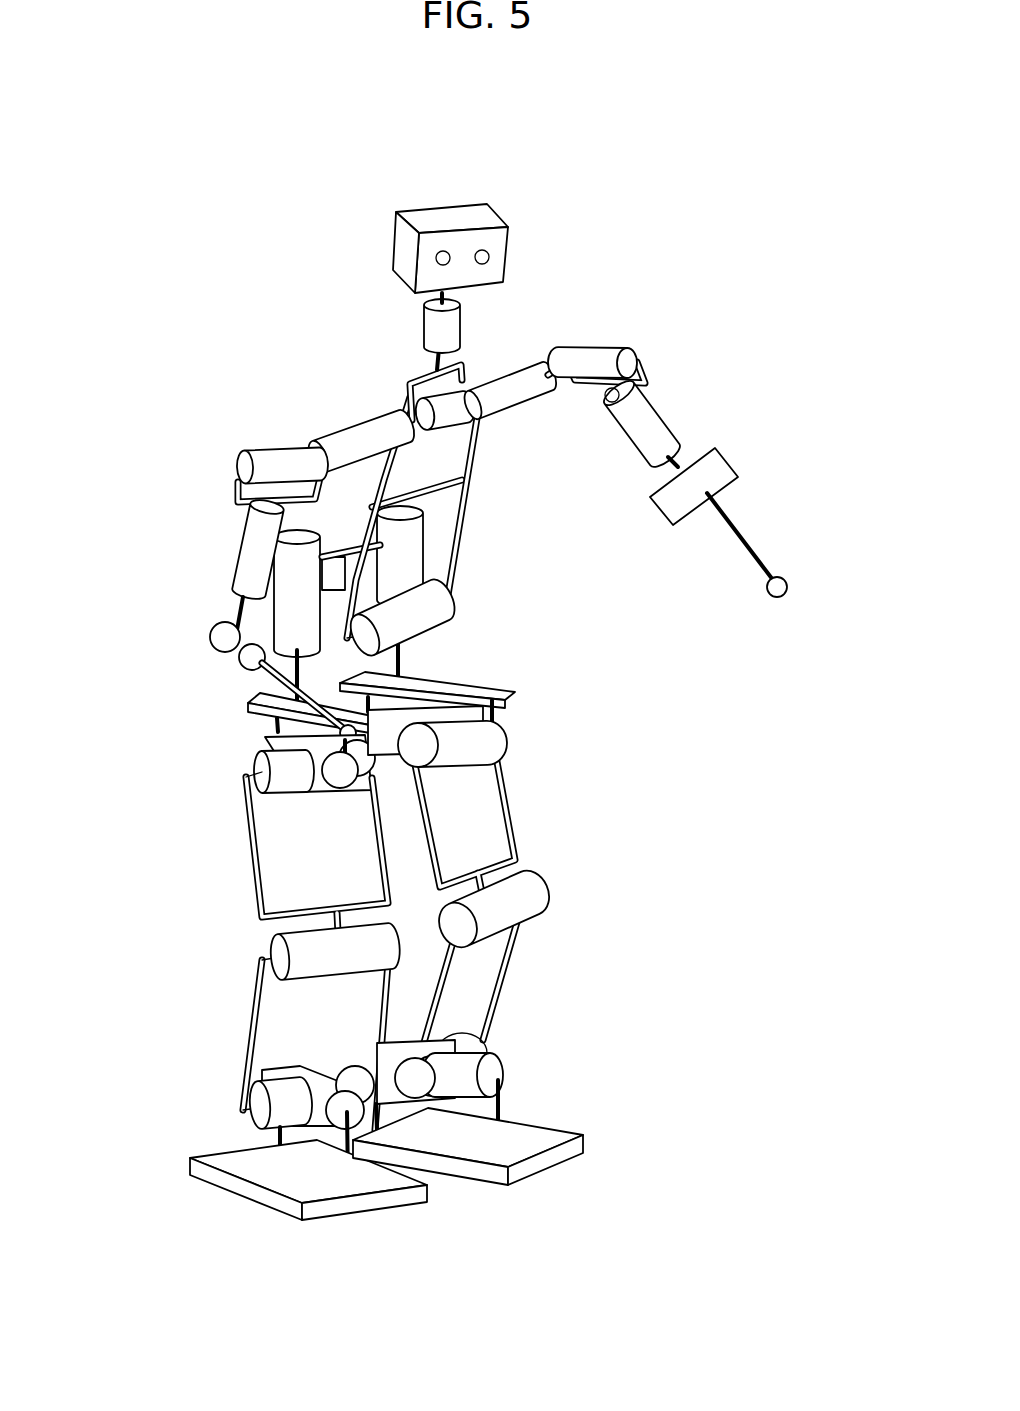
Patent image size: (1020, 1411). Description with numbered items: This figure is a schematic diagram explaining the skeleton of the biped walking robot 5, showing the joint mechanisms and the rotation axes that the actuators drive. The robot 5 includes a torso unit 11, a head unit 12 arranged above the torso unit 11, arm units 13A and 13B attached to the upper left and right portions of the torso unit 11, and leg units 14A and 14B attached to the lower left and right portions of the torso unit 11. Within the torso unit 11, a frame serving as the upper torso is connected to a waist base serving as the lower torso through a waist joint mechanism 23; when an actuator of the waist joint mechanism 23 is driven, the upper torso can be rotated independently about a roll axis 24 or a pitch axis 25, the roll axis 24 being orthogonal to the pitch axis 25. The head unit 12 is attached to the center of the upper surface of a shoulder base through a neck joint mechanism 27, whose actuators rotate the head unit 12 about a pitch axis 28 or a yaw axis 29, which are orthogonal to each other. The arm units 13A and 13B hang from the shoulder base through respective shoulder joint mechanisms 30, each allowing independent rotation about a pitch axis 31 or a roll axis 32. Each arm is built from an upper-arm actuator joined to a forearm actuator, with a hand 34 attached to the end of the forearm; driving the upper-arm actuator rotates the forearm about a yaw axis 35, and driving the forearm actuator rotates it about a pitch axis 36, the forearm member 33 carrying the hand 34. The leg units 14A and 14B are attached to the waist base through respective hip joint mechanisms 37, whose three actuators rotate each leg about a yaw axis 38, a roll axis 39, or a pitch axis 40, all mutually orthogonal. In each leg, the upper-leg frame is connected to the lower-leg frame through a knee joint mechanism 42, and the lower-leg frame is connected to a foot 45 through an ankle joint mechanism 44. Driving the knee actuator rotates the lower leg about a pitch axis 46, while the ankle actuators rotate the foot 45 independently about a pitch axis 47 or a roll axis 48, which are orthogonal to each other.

The biped walking robot 5 is at (477, 708).
The torso unit 11 is at (505, 423).
The head unit 12 is at (460, 208).
The arm unit 13A is at (662, 432).
The arm unit 13B is at (227, 530).
The leg unit 14A is at (563, 897).
The leg unit 14B is at (258, 949).
The waist joint mechanism 23 is at (424, 552).
The roll axis 24 is at (445, 590).
The pitch axis 25 is at (431, 617).
The neck joint mechanism 27 is at (377, 365).
The pitch axis 28 is at (410, 388).
The yaw axis 29 is at (428, 330).
The shoulder joint mechanism 30 is at (553, 338).
The pitch axis 31 is at (513, 370).
The roll axis 32 is at (582, 346).
The arm member 33 is at (717, 483).
The hand 34 is at (790, 587).
The yaw axis 35 is at (655, 415).
The pitch axis 36 is at (757, 486).
The hip joint mechanism 37 is at (233, 707).
The yaw axis 38 is at (245, 660).
The roll axis 39 is at (275, 737).
The pitch axis 40 is at (262, 764).
The knee joint mechanism 42 is at (262, 940).
The ankle joint mechanism 44 is at (242, 1099).
The foot 45 is at (368, 1205).
The pitch axis 46 is at (252, 1006).
The pitch axis 47 is at (170, 1062).
The roll axis 48 is at (252, 1070).